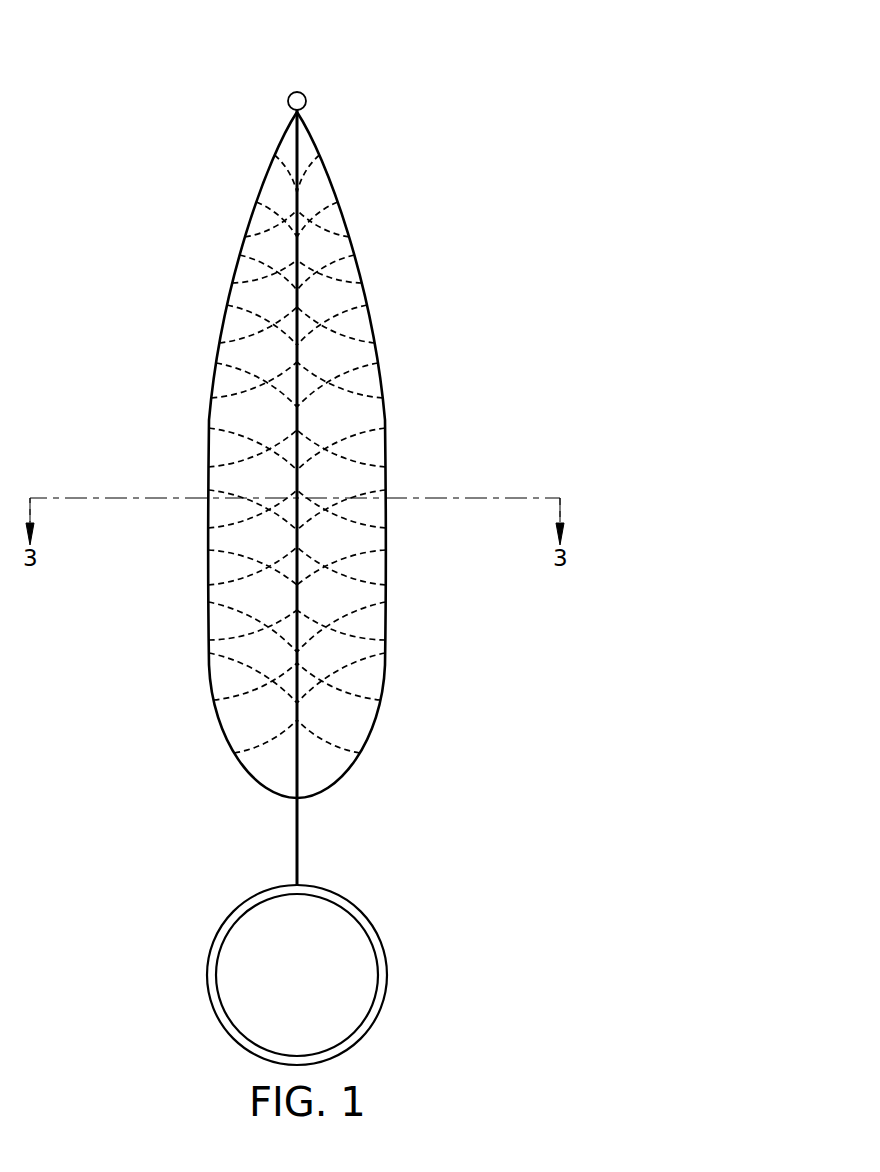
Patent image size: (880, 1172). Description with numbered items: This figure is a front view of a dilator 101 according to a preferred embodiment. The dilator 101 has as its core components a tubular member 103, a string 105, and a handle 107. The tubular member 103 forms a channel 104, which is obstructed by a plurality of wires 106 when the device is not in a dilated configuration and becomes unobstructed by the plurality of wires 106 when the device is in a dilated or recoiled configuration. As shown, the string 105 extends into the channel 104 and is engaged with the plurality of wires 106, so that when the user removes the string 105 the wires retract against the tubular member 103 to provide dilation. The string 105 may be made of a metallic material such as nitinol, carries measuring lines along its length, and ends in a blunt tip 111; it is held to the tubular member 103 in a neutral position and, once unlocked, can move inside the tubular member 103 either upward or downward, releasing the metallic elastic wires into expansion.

The dilator 101 is at (411, 83).
The tubular member 103 is at (211, 448).
The channel 104 is at (343, 414).
The string 105 is at (295, 840).
The plurality of wires 106 is at (239, 395).
The handle 107 is at (208, 973).
The blunt tip 111 is at (288, 100).